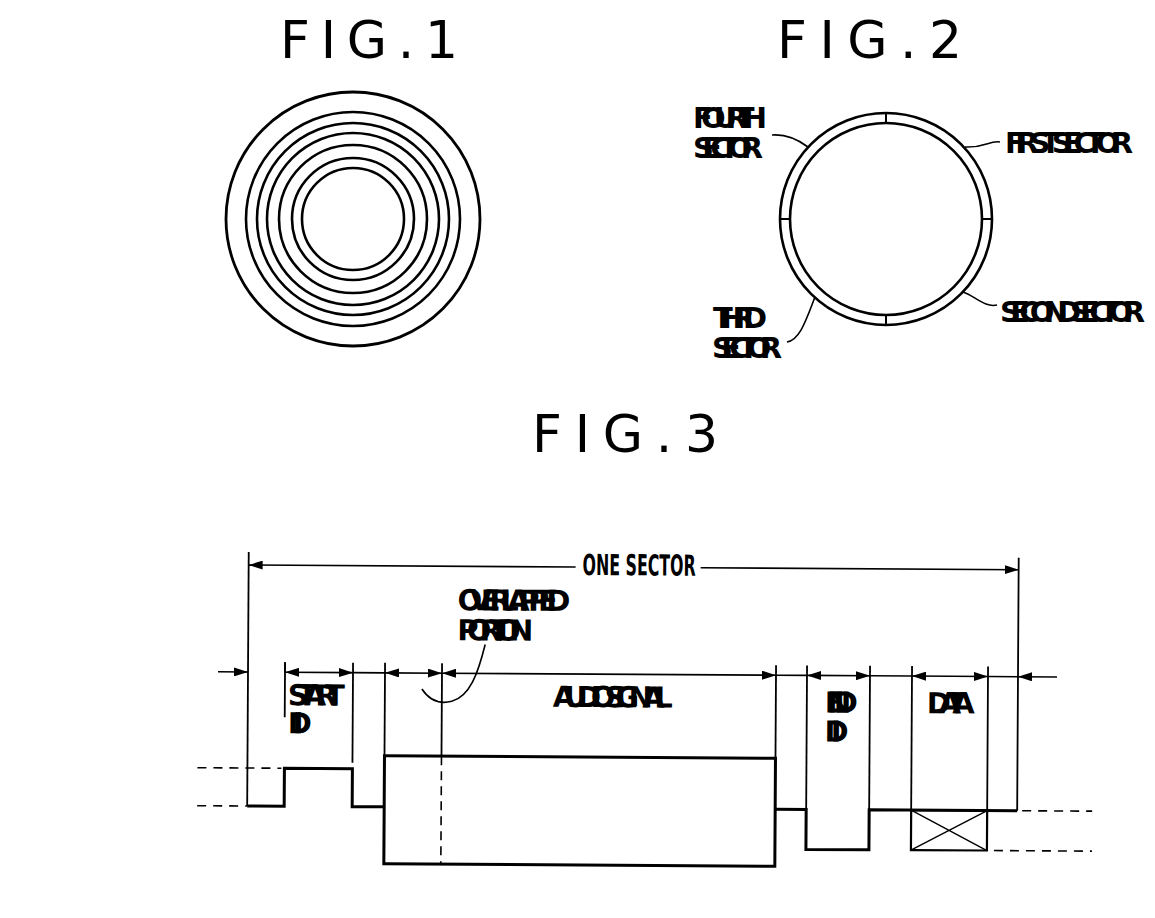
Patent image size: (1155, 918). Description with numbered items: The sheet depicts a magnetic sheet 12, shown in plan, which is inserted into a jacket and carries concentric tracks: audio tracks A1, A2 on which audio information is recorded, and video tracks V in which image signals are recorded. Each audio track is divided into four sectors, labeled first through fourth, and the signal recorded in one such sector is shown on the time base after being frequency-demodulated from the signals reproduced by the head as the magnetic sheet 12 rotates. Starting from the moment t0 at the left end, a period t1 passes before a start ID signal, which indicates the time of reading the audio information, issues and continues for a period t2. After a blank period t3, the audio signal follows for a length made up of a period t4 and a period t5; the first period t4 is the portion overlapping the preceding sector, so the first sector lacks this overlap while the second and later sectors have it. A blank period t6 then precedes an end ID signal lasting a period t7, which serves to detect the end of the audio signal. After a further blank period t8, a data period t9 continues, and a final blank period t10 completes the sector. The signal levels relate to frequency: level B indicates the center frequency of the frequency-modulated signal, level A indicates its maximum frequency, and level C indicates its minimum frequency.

In FIG. 1, the magnetic sheet 12 is at (455, 295).
In FIG. 1, the video tracks V is at (445, 164).
In FIG. 1, the audio track A1 is at (440, 207).
In FIG. 1, the audio track A2 is at (410, 245).
In FIG. 3, the moment t0 is at (246, 664).
In FIG. 3, the period t1 is at (272, 675).
In FIG. 3, the period t2 is at (308, 653).
In FIG. 3, the blank period t3 is at (365, 699).
In FIG. 3, the period t4 is at (403, 695).
In FIG. 3, the period t5 is at (530, 696).
In FIG. 3, the blank period t6 is at (788, 697).
In FIG. 3, the period t7 is at (828, 723).
In FIG. 3, the blank period t8 is at (885, 724).
In FIG. 3, the period t9 is at (936, 724).
In FIG. 3, the blank period t10 is at (1003, 684).
In FIG. 3, the level A is at (231, 771).
In FIG. 3, the level B is at (649, 810).
In FIG. 3, the level C is at (1055, 854).